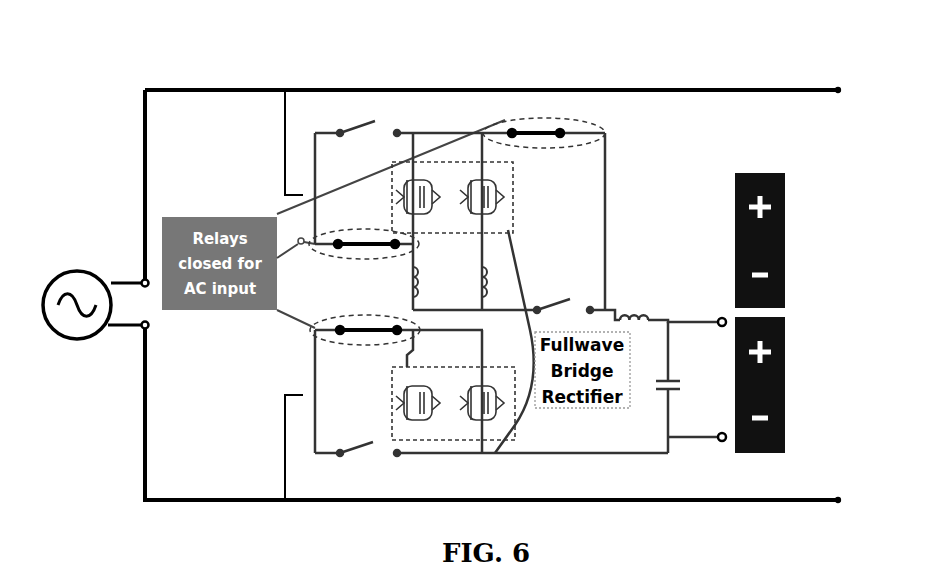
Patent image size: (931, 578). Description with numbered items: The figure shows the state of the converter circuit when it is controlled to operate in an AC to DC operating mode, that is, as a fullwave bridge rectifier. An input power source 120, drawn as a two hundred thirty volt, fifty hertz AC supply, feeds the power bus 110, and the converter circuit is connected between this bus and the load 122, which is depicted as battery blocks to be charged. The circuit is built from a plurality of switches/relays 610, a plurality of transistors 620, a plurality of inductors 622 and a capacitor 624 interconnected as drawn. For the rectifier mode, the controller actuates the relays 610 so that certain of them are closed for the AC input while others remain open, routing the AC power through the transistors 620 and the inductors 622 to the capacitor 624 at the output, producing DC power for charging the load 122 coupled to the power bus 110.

The power bus 110 is at (565, 90).
The input power source 120 is at (90, 262).
The load 122 is at (757, 172).
The switches/relays 610 is at (543, 124).
The transistors 620 is at (490, 440).
The inductors 622 is at (633, 312).
The capacitor 624 is at (678, 400).